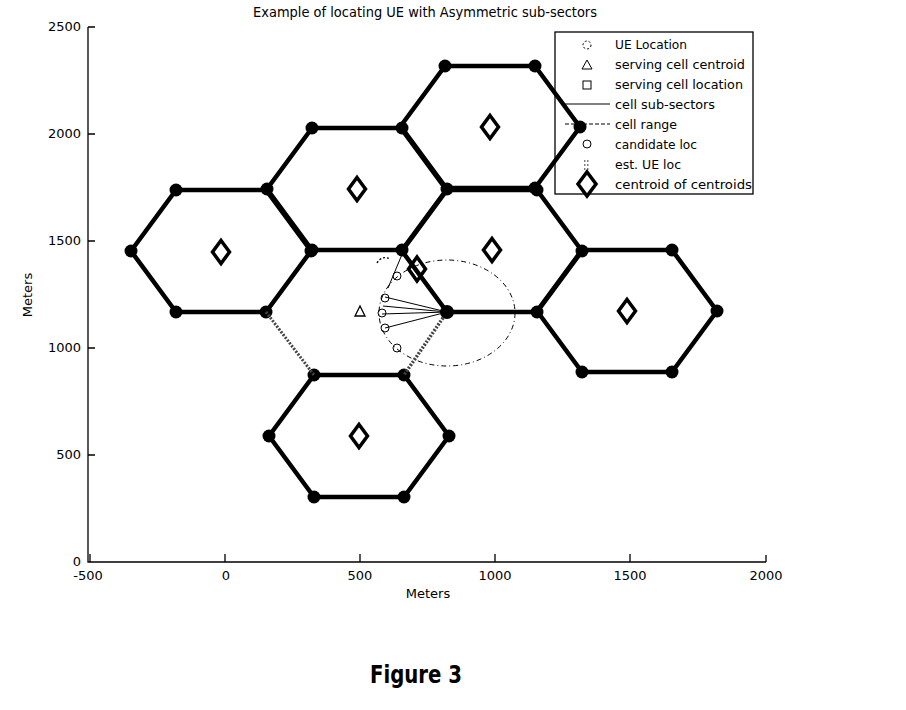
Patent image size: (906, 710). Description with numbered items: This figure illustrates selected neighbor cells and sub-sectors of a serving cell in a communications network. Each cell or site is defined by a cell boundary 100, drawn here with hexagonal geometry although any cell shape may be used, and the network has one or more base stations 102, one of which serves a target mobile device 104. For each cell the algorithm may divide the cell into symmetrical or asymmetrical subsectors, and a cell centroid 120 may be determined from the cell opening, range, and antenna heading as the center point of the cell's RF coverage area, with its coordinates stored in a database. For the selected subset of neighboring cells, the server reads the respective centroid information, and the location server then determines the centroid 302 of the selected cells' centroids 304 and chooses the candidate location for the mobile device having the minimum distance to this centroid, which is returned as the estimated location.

The cell boundary 100 is at (428, 348).
The base station 102 is at (453, 319).
The target mobile device 104 is at (378, 261).
The cell centroid 120 is at (360, 318).
The centroid of the selected cells' centroids 302 is at (417, 257).
The selected cells' centroids 304 is at (488, 115).